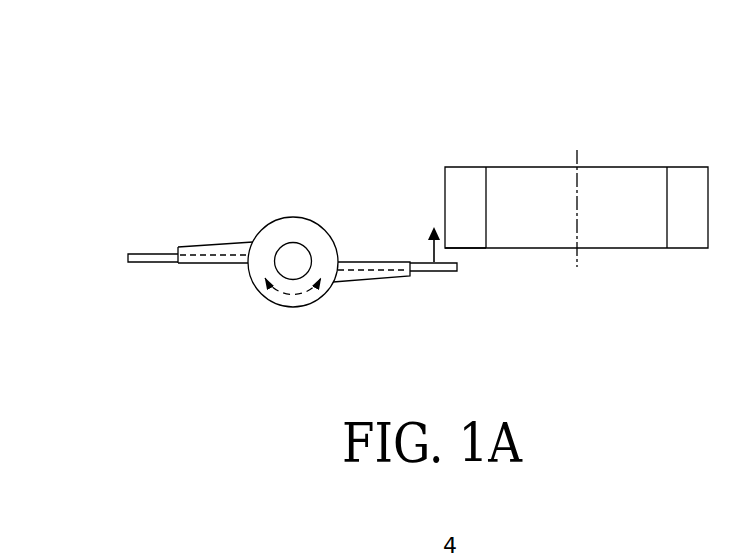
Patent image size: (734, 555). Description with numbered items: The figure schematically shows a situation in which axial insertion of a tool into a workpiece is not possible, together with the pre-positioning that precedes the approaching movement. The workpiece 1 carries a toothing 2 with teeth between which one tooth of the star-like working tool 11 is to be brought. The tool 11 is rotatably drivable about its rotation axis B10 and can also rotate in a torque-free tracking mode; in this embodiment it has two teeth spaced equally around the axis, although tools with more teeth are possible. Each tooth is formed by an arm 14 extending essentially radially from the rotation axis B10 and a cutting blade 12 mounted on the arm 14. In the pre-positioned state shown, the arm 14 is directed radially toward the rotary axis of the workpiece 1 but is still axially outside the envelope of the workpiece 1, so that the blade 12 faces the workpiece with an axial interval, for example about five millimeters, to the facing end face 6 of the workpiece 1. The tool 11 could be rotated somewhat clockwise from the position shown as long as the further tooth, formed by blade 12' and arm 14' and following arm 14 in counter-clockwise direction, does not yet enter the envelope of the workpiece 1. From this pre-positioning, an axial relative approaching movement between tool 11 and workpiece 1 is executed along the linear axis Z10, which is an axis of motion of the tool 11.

The workpiece 1 is at (633, 152).
The toothing 2 is at (460, 162).
The end face 6 is at (473, 249).
The working tool 11 is at (282, 206).
The cutting blade 12 is at (433, 314).
The cutting blade of further tooth 12' is at (132, 313).
The arm 14 is at (371, 330).
The arm of further tooth 14' is at (207, 318).
The rotation axis of the tool B10 is at (293, 311).
The linear axis Z10 is at (413, 244).